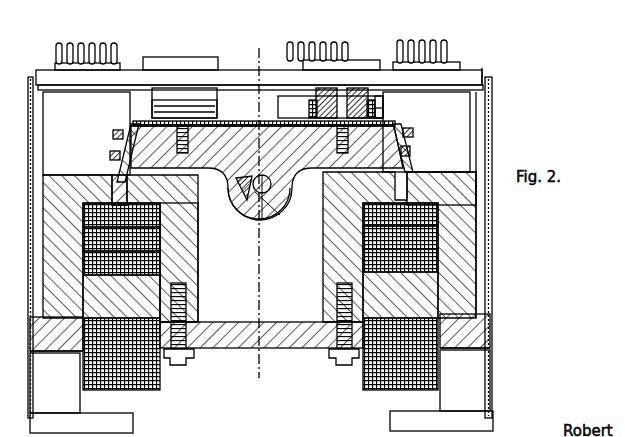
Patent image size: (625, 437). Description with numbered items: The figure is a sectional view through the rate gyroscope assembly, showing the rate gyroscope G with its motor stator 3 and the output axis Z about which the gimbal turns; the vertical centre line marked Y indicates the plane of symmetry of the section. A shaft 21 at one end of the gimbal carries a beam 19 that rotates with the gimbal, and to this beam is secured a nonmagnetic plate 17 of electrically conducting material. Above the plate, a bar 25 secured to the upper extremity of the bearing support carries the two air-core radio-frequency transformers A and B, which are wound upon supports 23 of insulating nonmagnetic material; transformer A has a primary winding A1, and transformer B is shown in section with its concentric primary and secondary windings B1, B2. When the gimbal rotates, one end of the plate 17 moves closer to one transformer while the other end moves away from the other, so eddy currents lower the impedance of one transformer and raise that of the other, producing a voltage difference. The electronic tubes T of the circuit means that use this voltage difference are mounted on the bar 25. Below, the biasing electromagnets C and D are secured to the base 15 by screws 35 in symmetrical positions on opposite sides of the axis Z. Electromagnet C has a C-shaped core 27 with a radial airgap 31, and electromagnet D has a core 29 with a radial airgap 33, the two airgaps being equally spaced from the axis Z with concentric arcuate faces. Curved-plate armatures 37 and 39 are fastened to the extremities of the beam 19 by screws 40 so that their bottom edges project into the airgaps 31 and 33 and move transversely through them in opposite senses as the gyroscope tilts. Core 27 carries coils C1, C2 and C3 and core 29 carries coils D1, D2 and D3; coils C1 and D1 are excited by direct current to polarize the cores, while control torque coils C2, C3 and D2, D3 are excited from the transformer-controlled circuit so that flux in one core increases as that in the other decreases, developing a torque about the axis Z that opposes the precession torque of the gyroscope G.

The stator 3 is at (407, 142).
The base 15 is at (289, 340).
The nonmagnetic plate 17 is at (410, 121).
The beam 19 is at (414, 139).
The shaft 21 is at (282, 195).
The supports 23 is at (195, 104).
The bar 25 is at (233, 72).
The core of electromagnet C 27 is at (338, 300).
The core of electromagnet D 29 is at (192, 274).
The radial airgap 31 is at (398, 192).
The radial airgap 33 is at (120, 182).
The screws 35 is at (192, 365).
The armature 37 is at (410, 160).
The armature 39 is at (112, 155).
The screws 40 is at (114, 134).
The transformer A is at (208, 106).
The primary winding A1 is at (184, 110).
The transformer B is at (311, 110).
The primary winding B1 is at (376, 105).
The secondary winding B2 is at (383, 113).
The electromagnet C is at (355, 277).
The polarizing coil C1 is at (361, 257).
The control torque coil C2 is at (361, 236).
The control torque coil C3 is at (361, 213).
The electromagnet D is at (190, 300).
The polarizing coil D1 is at (162, 260).
The control torque coil D2 is at (162, 239).
The control torque coil D3 is at (162, 215).
The rate gyroscope G is at (283, 260).
The electronic tubes T is at (117, 103).
The Y axis Y is at (257, 214).
The output axis Z- Z is at (396, 122).